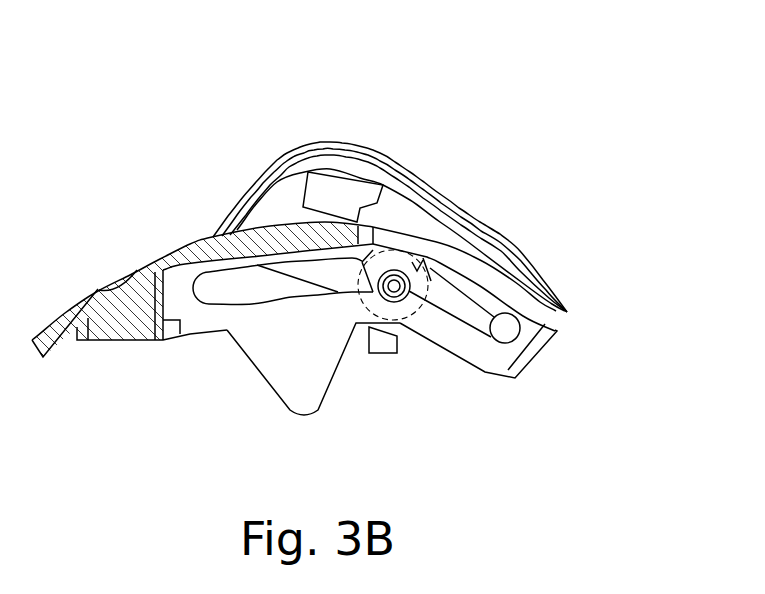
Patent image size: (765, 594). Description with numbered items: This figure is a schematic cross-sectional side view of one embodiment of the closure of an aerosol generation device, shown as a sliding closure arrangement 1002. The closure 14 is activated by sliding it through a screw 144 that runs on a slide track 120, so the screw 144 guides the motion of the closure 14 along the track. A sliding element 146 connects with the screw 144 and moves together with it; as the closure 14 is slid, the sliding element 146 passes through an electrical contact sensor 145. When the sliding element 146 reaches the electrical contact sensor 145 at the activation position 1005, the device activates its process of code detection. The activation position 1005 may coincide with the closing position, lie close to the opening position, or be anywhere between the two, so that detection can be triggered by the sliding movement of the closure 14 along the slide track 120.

The hood assembly 1002 is at (390, 177).
The closure 14 is at (388, 163).
The slide track 120 is at (336, 321).
The screw 144 is at (399, 284).
The electrical contact sensor 145 is at (386, 330).
The sliding element 146 is at (387, 354).
The activation position 1005 is at (328, 409).